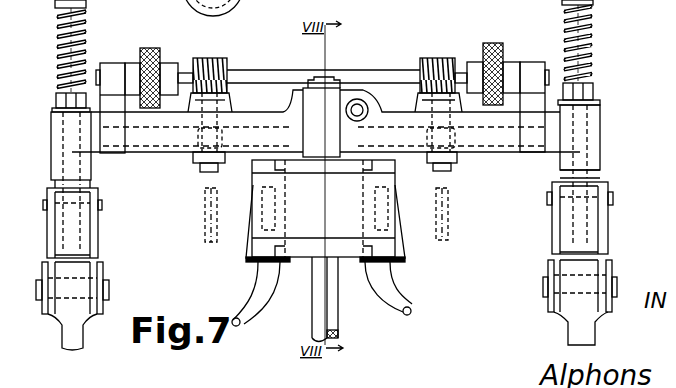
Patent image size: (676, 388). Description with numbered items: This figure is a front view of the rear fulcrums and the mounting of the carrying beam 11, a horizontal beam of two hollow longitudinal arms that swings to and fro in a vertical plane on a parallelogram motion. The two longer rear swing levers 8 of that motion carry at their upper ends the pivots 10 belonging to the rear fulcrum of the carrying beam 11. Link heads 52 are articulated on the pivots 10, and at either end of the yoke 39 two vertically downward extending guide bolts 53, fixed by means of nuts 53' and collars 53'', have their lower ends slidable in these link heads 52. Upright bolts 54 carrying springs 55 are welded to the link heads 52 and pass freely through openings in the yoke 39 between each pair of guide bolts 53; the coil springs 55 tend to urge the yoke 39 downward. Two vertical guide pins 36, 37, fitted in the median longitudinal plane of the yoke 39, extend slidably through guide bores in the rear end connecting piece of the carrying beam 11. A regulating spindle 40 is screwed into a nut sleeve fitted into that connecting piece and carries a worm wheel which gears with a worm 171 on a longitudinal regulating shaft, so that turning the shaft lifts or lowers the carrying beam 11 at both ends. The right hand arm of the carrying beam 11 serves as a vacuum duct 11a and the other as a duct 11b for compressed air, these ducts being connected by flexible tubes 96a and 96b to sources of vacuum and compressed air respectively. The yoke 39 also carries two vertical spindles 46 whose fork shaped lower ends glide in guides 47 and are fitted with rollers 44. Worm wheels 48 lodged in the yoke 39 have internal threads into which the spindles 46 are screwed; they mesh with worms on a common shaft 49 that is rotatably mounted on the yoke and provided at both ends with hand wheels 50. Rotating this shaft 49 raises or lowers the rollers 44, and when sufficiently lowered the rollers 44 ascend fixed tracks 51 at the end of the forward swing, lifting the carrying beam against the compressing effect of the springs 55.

The rear swing lever 8 is at (78, 333).
The pivot 10 is at (105, 286).
The carrying beam 11 is at (387, 180).
The vacuum duct 11a is at (262, 194).
The compressed air duct 11b is at (377, 222).
The vertical guide pin 36 is at (318, 319).
The vertical guide pin 37 is at (318, 332).
The yoke 39 is at (134, 153).
The regulating spindle 40 is at (326, 80).
The roller 44 is at (208, 170).
The vertical spindle 46 is at (210, 97).
The guide 47 is at (193, 160).
The worm wheel 48 is at (230, 65).
The common shaft 49 is at (277, 75).
The hand wheel 50 is at (141, 55).
The fixed track 51 is at (212, 213).
The link head 52 is at (98, 230).
The guide bolt 53 is at (332, 171).
The nut 53' is at (599, 88).
The collar 53'' is at (608, 167).
The upright bolt 54 is at (72, 55).
The coil spring 55 is at (60, 38).
The flexible tube 96a is at (256, 301).
The flexible tube 96b is at (400, 298).
The worm 171 is at (358, 99).